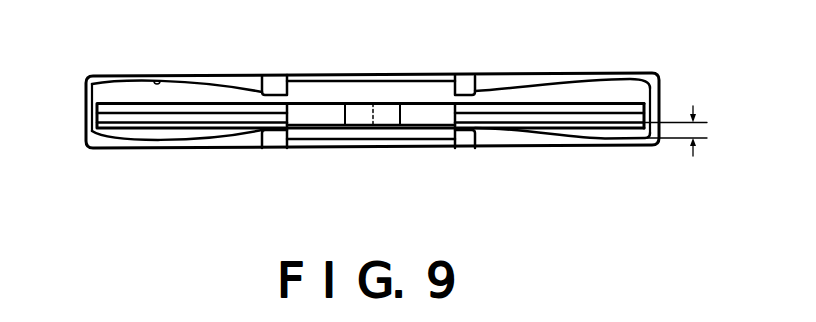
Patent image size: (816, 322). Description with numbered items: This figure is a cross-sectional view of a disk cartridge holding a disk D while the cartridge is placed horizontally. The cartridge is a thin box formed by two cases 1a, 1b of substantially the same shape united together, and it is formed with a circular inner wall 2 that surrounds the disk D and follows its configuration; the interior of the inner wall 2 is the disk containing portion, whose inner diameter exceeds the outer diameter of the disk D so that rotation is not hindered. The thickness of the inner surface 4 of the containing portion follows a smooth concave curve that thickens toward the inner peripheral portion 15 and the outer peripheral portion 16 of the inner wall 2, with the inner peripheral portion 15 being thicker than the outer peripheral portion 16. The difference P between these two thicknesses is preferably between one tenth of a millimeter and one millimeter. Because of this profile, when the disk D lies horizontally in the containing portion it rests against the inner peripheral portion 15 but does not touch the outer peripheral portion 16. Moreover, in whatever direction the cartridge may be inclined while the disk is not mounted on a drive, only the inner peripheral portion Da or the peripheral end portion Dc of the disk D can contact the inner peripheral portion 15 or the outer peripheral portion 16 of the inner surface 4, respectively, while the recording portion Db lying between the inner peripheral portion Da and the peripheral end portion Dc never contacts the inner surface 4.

The circular inner wall 2 is at (85, 97).
The outer peripheral portion 16 is at (112, 82).
The case 1a is at (233, 89).
The case 1b is at (253, 138).
The inner surface of the disk containing portion 4 is at (157, 81).
The inner peripheral portion 15 is at (277, 93).
The disk D is at (580, 104).
The inner peripheral portion of the disk Da is at (427, 113).
The recording portion Db is at (547, 100).
The peripheral end portion of the disk Dc is at (635, 104).
The difference in thickness P is at (679, 136).